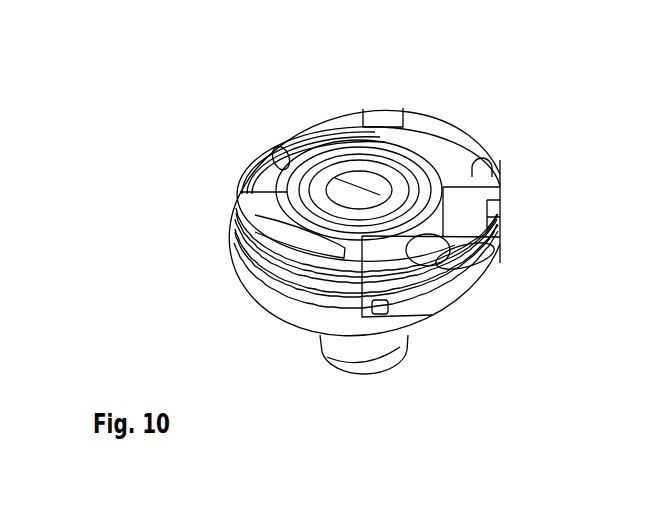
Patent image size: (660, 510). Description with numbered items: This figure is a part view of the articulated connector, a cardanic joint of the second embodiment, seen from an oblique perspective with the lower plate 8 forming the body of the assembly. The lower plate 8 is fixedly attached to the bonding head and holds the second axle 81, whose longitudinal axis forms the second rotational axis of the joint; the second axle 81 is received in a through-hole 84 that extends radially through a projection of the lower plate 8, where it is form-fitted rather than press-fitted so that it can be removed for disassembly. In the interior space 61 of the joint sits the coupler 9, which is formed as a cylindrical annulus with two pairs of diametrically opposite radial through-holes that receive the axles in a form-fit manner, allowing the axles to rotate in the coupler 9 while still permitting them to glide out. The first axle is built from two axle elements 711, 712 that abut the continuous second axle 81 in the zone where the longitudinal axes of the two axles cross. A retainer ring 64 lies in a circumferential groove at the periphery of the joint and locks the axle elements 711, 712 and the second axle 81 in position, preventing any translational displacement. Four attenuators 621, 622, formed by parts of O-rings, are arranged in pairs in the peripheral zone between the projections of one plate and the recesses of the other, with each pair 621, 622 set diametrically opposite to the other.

The lower plate 8 is at (229, 262).
The coupler 9 is at (366, 172).
The interior space 61 is at (361, 162).
The retainer ring 64 is at (427, 282).
The second axle 81 is at (284, 166).
The through-hole 84 is at (272, 282).
The attenuator 621 is at (247, 207).
The attenuator 622 is at (480, 263).
The axle element 711 is at (384, 183).
The axle element 712 is at (265, 277).